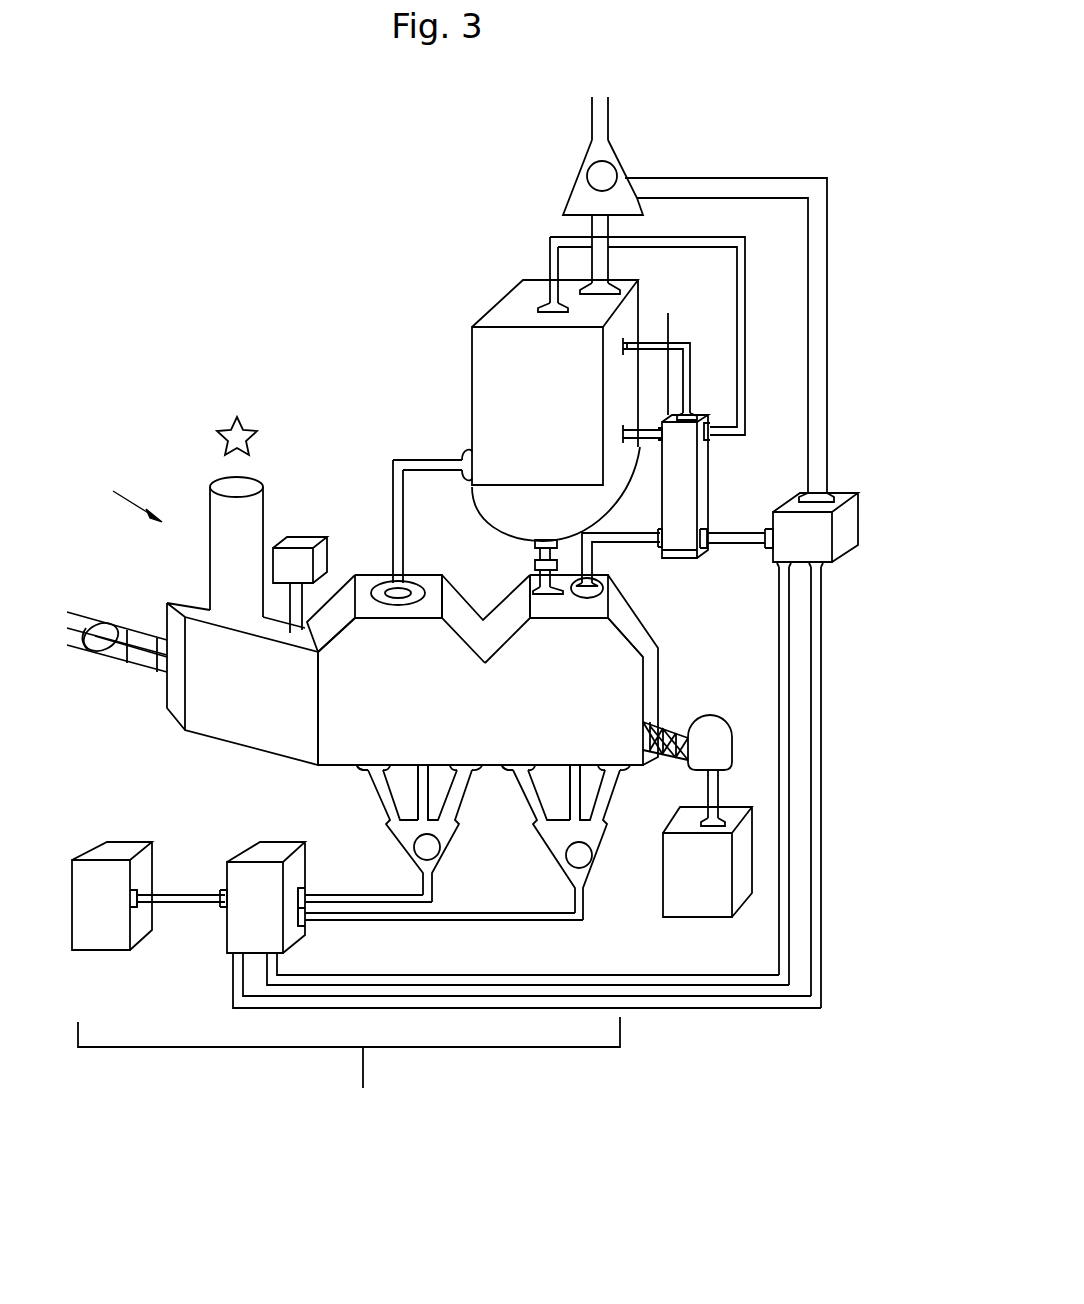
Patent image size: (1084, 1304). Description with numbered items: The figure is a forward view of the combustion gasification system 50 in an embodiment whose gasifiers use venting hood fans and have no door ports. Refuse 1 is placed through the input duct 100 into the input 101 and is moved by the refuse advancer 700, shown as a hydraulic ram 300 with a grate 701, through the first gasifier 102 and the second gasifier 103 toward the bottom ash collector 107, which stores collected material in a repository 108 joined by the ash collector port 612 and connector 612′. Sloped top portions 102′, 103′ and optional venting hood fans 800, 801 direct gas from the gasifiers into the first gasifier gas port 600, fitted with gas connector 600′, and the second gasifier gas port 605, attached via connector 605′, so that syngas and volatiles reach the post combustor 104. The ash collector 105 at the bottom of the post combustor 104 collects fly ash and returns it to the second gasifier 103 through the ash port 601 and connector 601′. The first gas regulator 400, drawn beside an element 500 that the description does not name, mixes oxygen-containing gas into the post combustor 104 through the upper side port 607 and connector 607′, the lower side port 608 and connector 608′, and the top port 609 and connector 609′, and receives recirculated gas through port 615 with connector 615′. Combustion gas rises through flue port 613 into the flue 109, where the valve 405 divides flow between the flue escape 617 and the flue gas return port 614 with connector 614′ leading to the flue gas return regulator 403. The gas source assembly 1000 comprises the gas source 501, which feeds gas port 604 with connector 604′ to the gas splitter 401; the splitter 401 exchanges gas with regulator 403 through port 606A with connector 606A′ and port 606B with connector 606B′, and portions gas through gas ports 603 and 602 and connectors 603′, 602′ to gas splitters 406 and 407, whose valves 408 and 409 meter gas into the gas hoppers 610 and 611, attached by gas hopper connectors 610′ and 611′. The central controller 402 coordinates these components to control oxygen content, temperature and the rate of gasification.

The refuse 1 is at (217, 431).
The combustion gasification system 50 is at (115, 492).
The input duct 100 is at (236, 547).
The input 101 is at (242, 684).
The first gasifier 102 is at (418, 670).
The sloped top portion 102′ is at (452, 634).
The second gasifier 103 is at (571, 670).
The sloped top portion 103′ is at (612, 633).
The post combustor 104 is at (555, 382).
The ash collector 105 is at (556, 494).
The bottom ash collector 107 is at (710, 742).
The repository 108 is at (707, 862).
The flue 109 is at (612, 149).
The hydraulic ram 300 is at (102, 655).
The first gas regulator 400 is at (690, 467).
The gas splitter 401 is at (266, 897).
The central controller 402 is at (300, 585).
The flue gas return regulator 403 is at (815, 527).
The valve 405 is at (598, 175).
The gas splitter 406 is at (395, 838).
The gas splitter 407 is at (548, 848).
The valve 408 is at (426, 846).
The valve 409 is at (580, 855).
The heat exchanger 500 is at (672, 556).
The gas source 501 is at (112, 896).
The first gasifier gas port 600 is at (392, 458).
The gas connector 600′ is at (388, 584).
The ash port 601 is at (538, 558).
The connector 601′ is at (535, 590).
The gas port 602 is at (460, 922).
The connector 602′ is at (308, 925).
The gas port 603 is at (343, 888).
The connector 603′ is at (304, 890).
The gas port 604 is at (187, 893).
The connector 604′ is at (138, 905).
The second gasifier gas port 605 is at (658, 535).
The gas port connector 605′ is at (605, 590).
The port 606A is at (828, 833).
The connector 606A′ is at (827, 573).
The port 606B is at (560, 973).
The connector 606B′ is at (775, 582).
The side port 607 is at (673, 352).
The connector 607′ is at (621, 345).
The side port 608 is at (648, 428).
The connector 608′ is at (621, 437).
The upper port 609 is at (745, 275).
The connector 609′ is at (712, 440).
The gas hoppers 610 is at (458, 795).
The gas hopper connectors 610′ is at (366, 779).
The gas hoppers 611 is at (596, 786).
The gas hopper connectors 611′ is at (513, 775).
The ash collector port 612 is at (719, 786).
The connector 612′ is at (700, 817).
The flue port 613 is at (588, 225).
The flue gas return port 614 is at (829, 347).
The connector 614′ is at (832, 493).
The port 615 is at (748, 527).
The connector 615′ is at (708, 548).
The flue escape 617 is at (590, 123).
The refuse advancer 700 is at (672, 722).
The grate 701 is at (690, 722).
The venting hood fan 800 is at (418, 583).
The venting hood fan 801 is at (603, 597).
The gas source assembly 1000 is at (349, 1067).